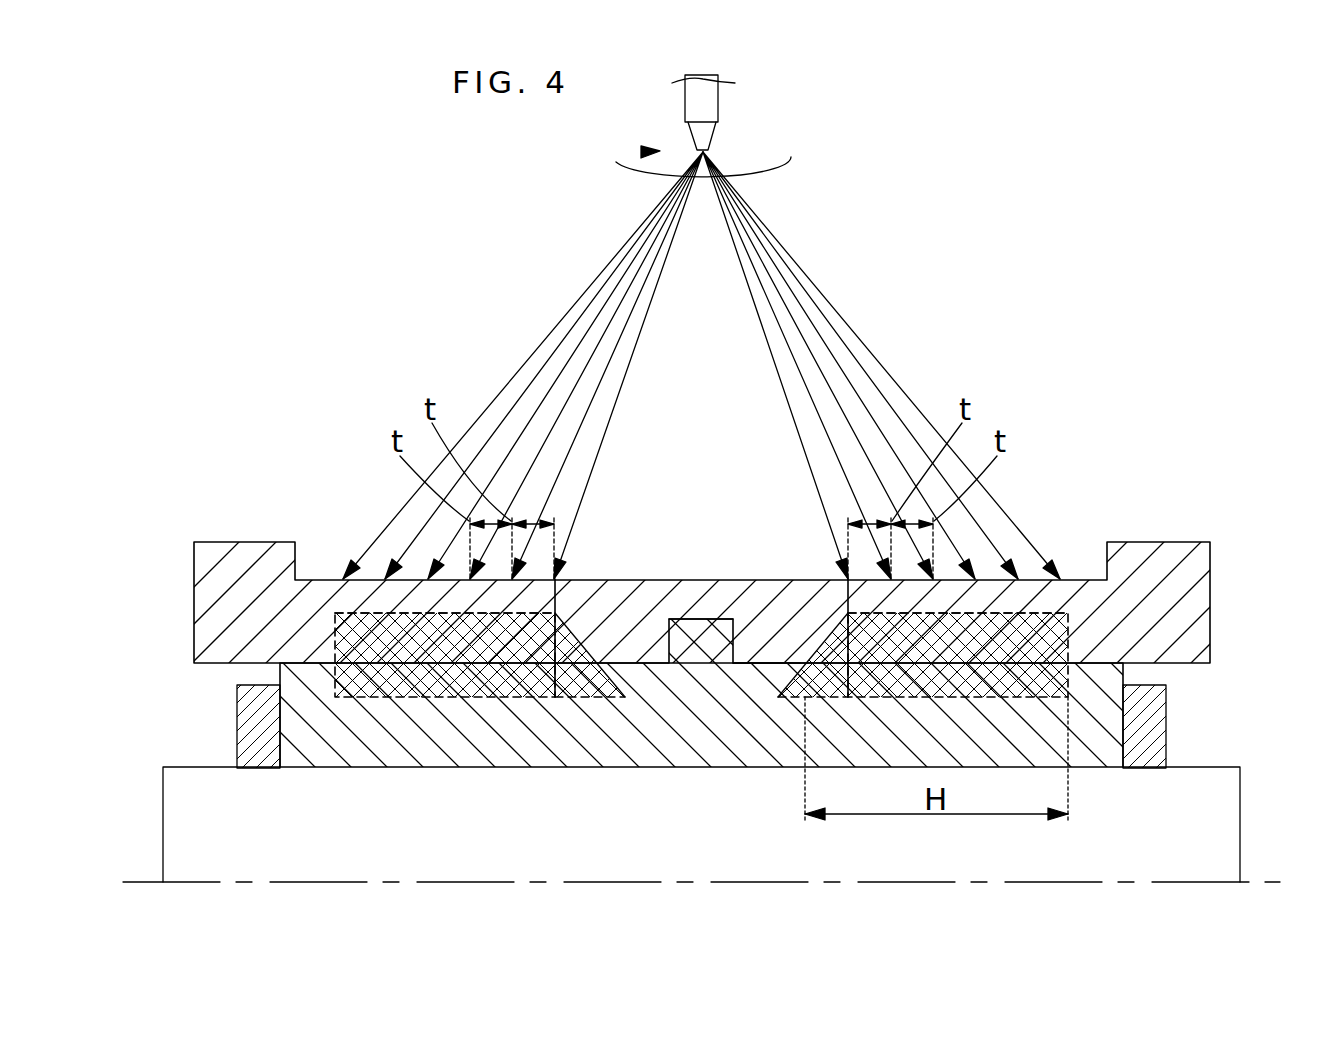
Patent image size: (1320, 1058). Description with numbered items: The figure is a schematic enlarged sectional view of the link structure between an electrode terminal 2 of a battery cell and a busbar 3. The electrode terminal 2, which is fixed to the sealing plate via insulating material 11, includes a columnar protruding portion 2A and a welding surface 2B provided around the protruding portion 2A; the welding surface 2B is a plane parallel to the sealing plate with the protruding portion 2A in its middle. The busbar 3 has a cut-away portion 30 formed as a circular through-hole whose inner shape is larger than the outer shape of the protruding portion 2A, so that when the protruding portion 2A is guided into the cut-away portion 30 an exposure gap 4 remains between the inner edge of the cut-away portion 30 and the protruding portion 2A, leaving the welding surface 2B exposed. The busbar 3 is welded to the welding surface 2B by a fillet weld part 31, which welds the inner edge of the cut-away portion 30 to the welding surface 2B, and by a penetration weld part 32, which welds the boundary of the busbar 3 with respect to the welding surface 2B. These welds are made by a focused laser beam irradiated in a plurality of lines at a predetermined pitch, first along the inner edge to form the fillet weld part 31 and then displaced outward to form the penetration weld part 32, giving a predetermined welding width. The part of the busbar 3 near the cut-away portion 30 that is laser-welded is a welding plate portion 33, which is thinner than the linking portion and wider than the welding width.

The electrode terminal 2 is at (768, 486).
The protruding portion 2A is at (697, 616).
The welding surface 2B is at (770, 660).
The busbar 3 is at (1220, 580).
The exposure gap 4 is at (628, 602).
The insulating material 11 is at (248, 738).
The cut-away portion 30 is at (592, 579).
The fillet weld part 31 is at (838, 624).
The penetration weld part 32 is at (1035, 635).
The welding plate portion 33 is at (418, 600).